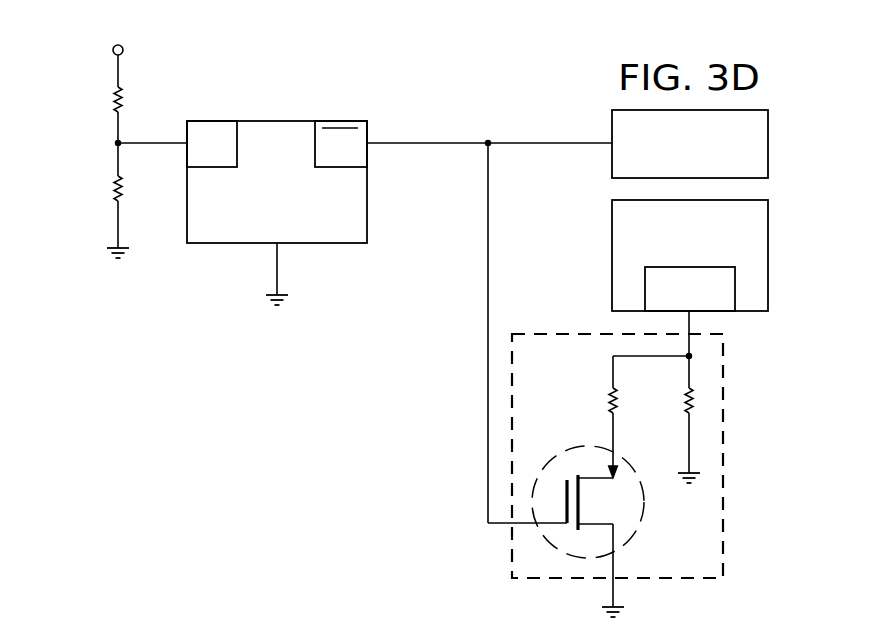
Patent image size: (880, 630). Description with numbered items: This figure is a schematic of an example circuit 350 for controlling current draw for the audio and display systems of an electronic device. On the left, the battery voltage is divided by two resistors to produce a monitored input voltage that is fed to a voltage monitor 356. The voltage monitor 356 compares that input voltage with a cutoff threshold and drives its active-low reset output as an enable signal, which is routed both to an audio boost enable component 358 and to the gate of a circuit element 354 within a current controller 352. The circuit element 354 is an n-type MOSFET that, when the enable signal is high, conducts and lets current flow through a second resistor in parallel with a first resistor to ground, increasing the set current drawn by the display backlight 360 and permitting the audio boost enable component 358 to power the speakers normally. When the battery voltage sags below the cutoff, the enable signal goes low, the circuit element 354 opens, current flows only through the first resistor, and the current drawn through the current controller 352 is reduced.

The circuit 350 is at (452, 316).
The current controller 352 is at (662, 475).
The circuit element 354 is at (643, 518).
The voltage monitor 356 is at (265, 120).
The audio boost enable component 358 is at (771, 131).
The display backlight 360 is at (771, 258).